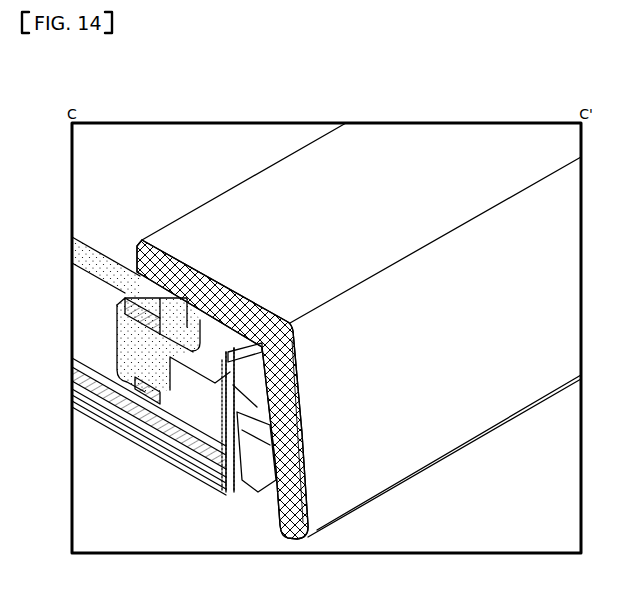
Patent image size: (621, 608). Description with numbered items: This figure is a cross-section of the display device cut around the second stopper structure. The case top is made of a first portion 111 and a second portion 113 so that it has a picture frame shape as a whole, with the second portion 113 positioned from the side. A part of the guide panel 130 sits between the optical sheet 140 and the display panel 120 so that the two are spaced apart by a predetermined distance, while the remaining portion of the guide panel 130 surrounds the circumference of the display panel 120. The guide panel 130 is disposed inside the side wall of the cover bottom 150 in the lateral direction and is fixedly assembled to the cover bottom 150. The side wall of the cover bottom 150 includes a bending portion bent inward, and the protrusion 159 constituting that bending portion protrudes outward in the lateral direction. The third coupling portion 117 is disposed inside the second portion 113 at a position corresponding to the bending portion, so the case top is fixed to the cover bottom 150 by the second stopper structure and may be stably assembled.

The first portion 111 is at (198, 270).
The second portion 113 is at (308, 468).
The third coupling portion 117 is at (270, 467).
The display panel 120 is at (101, 270).
The guide panel 130 is at (118, 338).
The optical sheet 140 is at (137, 438).
The cover bottom 150 is at (86, 420).
The protrusion 159 is at (226, 492).